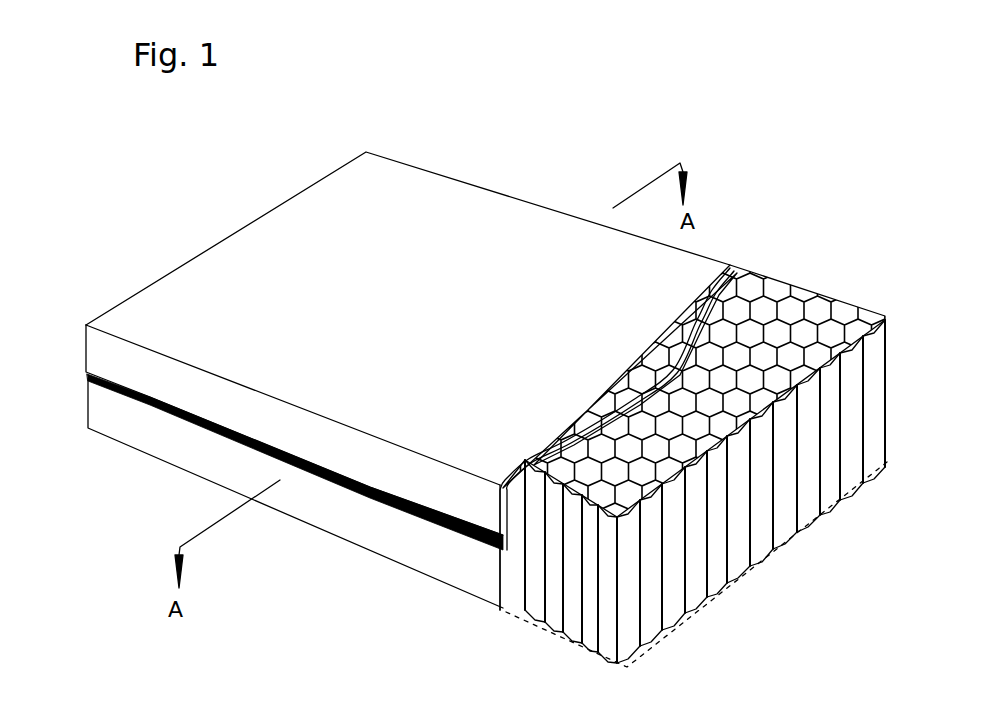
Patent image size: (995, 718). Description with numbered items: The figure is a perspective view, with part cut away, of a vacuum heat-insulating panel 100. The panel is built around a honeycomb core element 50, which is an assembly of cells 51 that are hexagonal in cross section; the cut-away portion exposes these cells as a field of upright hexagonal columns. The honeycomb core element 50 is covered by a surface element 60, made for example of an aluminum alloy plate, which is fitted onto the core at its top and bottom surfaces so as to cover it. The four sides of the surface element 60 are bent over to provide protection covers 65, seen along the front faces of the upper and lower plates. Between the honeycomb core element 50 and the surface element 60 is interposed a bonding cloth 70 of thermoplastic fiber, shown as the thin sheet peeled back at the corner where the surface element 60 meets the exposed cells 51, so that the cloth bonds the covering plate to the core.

The vacuum heat-insulating panel 100 is at (198, 230).
The protection covers 65 is at (385, 477).
The surface element 60 is at (442, 388).
The bonding cloth 70 is at (730, 285).
The honeycomb core element 50 is at (797, 297).
The cells 51 is at (683, 477).